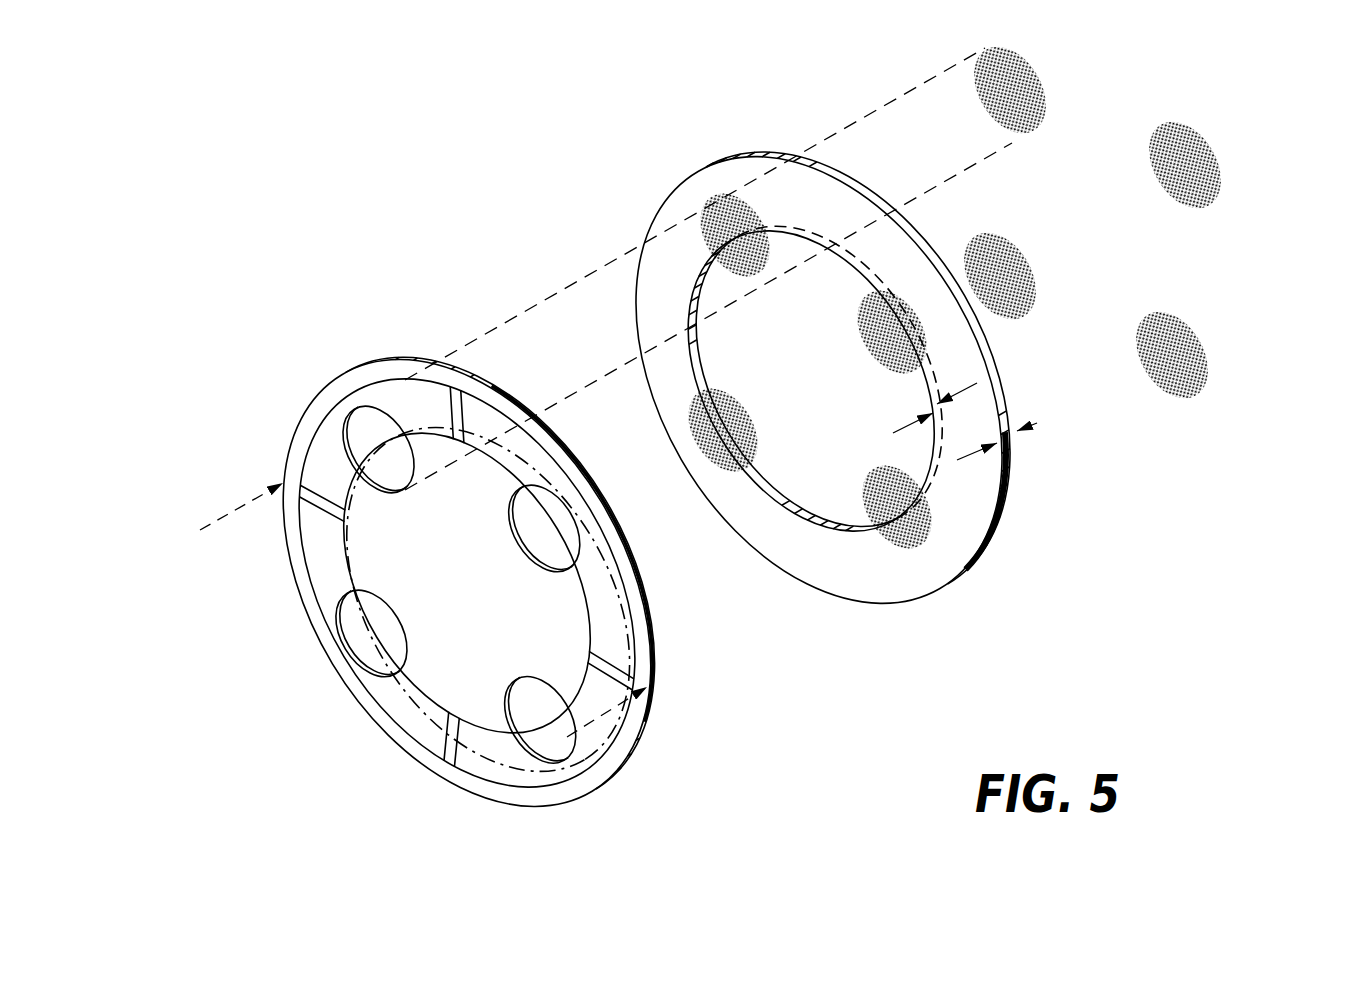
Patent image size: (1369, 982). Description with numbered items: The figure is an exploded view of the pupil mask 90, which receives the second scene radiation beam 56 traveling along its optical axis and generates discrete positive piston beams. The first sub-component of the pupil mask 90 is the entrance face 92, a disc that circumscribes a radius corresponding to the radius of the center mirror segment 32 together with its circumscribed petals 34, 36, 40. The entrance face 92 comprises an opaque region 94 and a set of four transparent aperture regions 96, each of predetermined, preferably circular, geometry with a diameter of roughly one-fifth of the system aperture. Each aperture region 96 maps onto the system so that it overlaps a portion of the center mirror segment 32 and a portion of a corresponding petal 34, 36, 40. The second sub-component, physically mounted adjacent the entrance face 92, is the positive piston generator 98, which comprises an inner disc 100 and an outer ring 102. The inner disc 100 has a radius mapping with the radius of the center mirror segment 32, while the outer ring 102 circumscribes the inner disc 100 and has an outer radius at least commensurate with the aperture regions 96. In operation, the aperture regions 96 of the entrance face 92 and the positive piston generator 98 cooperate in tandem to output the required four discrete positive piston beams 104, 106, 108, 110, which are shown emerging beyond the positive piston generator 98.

The pupil mask 90 is at (545, 228).
The entrance face 92 is at (445, 581).
The opaque region 94 is at (396, 362).
The aperture regions 96 is at (356, 424).
The petal 34 is at (300, 456).
The center mirror segment 32 is at (455, 750).
The petal 40 is at (400, 708).
The petal 36 is at (487, 486).
The second scene radiation beam 56 is at (245, 515).
The positive piston generator 98 is at (823, 397).
The inner disc 100 is at (826, 388).
The outer ring 102 is at (705, 162).
The positive piston beam 104 is at (1042, 70).
The positive piston beam 106 is at (1030, 262).
The positive piston beam 108 is at (1218, 160).
The positive piston beam 110 is at (1205, 340).